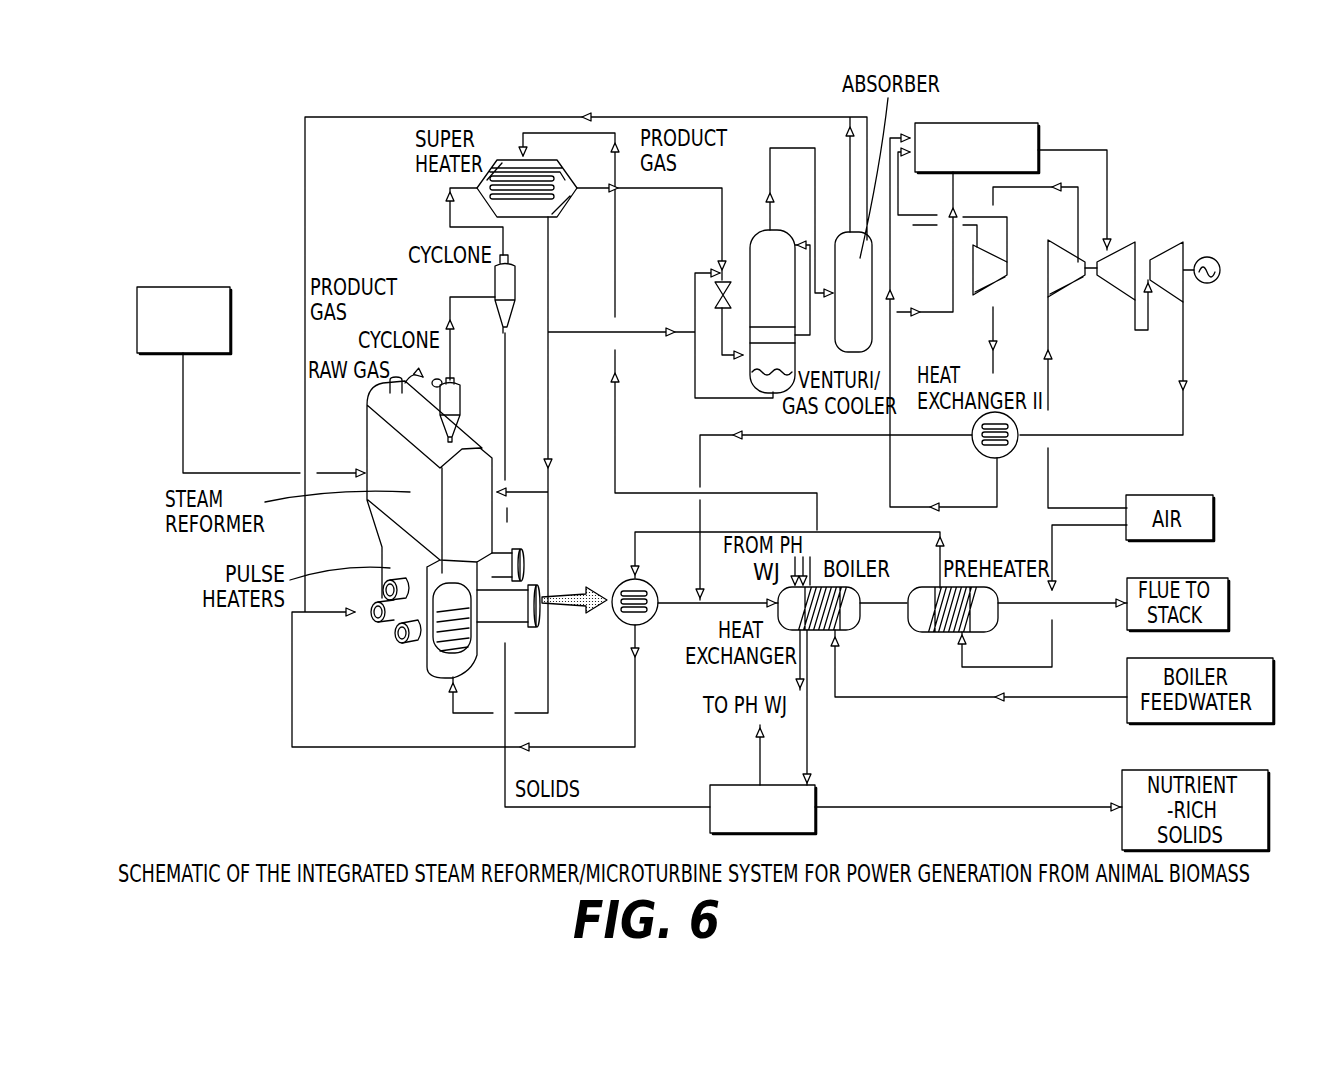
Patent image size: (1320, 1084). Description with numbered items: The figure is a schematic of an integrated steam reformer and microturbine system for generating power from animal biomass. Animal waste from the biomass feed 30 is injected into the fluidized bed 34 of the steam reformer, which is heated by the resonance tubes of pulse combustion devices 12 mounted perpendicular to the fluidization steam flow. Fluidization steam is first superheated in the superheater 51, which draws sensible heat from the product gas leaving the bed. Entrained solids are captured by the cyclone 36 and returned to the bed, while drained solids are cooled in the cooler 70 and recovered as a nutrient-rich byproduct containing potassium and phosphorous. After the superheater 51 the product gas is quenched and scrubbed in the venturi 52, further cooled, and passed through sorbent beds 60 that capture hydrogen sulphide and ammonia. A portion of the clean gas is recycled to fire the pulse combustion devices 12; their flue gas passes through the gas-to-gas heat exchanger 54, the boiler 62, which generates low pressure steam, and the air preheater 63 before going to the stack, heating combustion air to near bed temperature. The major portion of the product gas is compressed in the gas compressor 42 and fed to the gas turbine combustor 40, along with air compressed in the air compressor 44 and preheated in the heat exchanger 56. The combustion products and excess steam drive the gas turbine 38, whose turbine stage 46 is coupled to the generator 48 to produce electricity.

The pulse combustion devices 12 is at (512, 541).
The biomass feed 30 is at (178, 287).
The fluidized bed 34 is at (364, 444).
The cyclone 36 is at (462, 398).
The gas turbine 38 is at (1161, 213).
The gas turbine combustor 40 is at (1040, 127).
The gas compressor 42 is at (980, 297).
The air compressor 44 is at (1070, 285).
The gas turbine 46 is at (1113, 248).
The generator 48 is at (1220, 268).
The superheater 51 is at (570, 200).
The venturi 52 is at (795, 345).
The gas-to-gas heat exchanger 54 is at (643, 627).
The heat exchanger 56 is at (1005, 455).
The sorbent beds 60 is at (840, 236).
The boiler 62 is at (851, 631).
The air preheater 63 is at (988, 632).
The cooler 70 is at (818, 830).